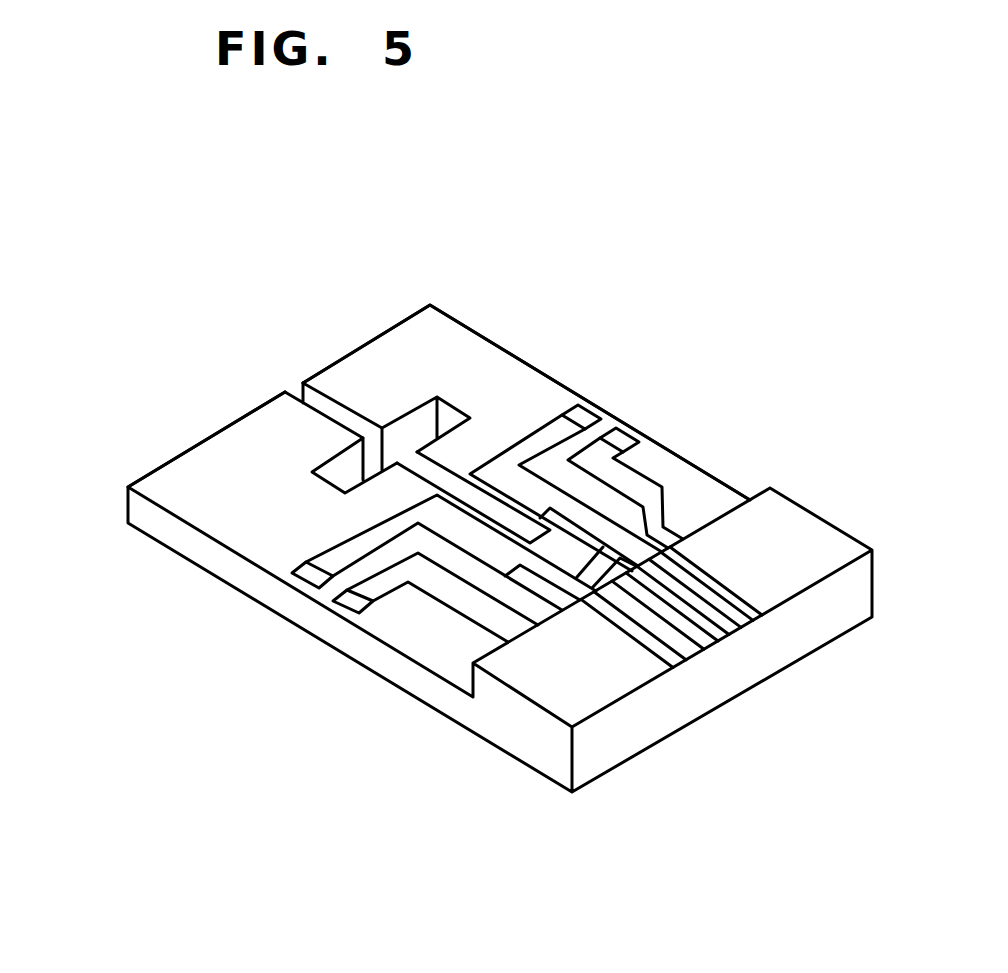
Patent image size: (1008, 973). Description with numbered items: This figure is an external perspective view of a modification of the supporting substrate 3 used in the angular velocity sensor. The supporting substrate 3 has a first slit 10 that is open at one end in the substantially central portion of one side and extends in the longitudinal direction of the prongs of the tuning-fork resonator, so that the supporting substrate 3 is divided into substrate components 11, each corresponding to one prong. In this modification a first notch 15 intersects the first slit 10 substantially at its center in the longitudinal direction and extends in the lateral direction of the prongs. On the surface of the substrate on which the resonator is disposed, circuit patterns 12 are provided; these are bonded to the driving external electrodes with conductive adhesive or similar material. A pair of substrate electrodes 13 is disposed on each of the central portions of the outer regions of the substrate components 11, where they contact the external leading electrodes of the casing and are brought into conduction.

The supporting substrate 3 is at (410, 696).
The first slit 10 is at (288, 386).
The substrate components 11 is at (520, 386).
The circuit patterns 12 is at (750, 592).
The substrate electrodes 13 is at (622, 432).
The first notch 15 is at (423, 432).